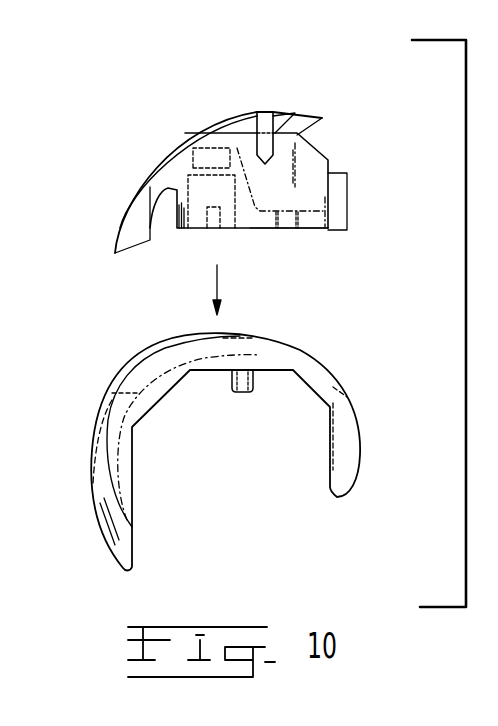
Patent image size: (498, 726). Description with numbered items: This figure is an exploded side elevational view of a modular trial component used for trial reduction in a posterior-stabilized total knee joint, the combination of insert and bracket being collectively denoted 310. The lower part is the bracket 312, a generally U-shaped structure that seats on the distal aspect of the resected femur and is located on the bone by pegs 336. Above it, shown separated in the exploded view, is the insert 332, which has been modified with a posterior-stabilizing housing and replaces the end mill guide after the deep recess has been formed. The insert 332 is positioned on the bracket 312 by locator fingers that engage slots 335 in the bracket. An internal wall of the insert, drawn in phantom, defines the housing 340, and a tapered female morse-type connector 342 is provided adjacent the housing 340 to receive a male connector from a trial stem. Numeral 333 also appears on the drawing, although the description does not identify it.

The combination of insert and bracket 310 is at (251, 183).
The bracket 312 is at (237, 442).
The insert 332 is at (340, 101).
The base of housing 333 is at (265, 210).
The slots 335 is at (128, 393).
The pegs 336 is at (243, 392).
The housing 340 is at (280, 182).
The tapered female morse-type connector 342 is at (205, 198).